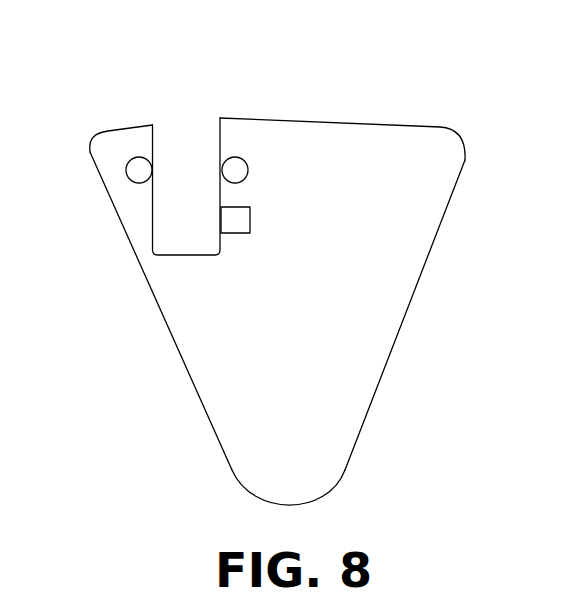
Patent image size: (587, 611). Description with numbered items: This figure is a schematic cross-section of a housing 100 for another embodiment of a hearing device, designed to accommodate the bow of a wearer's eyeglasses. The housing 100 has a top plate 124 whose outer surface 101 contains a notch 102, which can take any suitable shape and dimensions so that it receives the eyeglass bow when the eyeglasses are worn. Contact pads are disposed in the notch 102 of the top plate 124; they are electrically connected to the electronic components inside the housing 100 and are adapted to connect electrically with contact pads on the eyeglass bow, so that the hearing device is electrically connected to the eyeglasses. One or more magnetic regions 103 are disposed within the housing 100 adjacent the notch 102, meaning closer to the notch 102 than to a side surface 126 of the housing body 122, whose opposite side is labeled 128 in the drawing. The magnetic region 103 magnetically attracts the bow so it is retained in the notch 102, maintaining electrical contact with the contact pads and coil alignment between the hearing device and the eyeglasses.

The housing 100 is at (287, 266).
The outer surface 101 is at (311, 276).
The notch 102 is at (193, 112).
The magnetic region 103 is at (250, 220).
The housing body 122 is at (166, 455).
The top plate 124 is at (443, 128).
The side surface 126 is at (423, 277).
The left side edge 128 is at (173, 345).